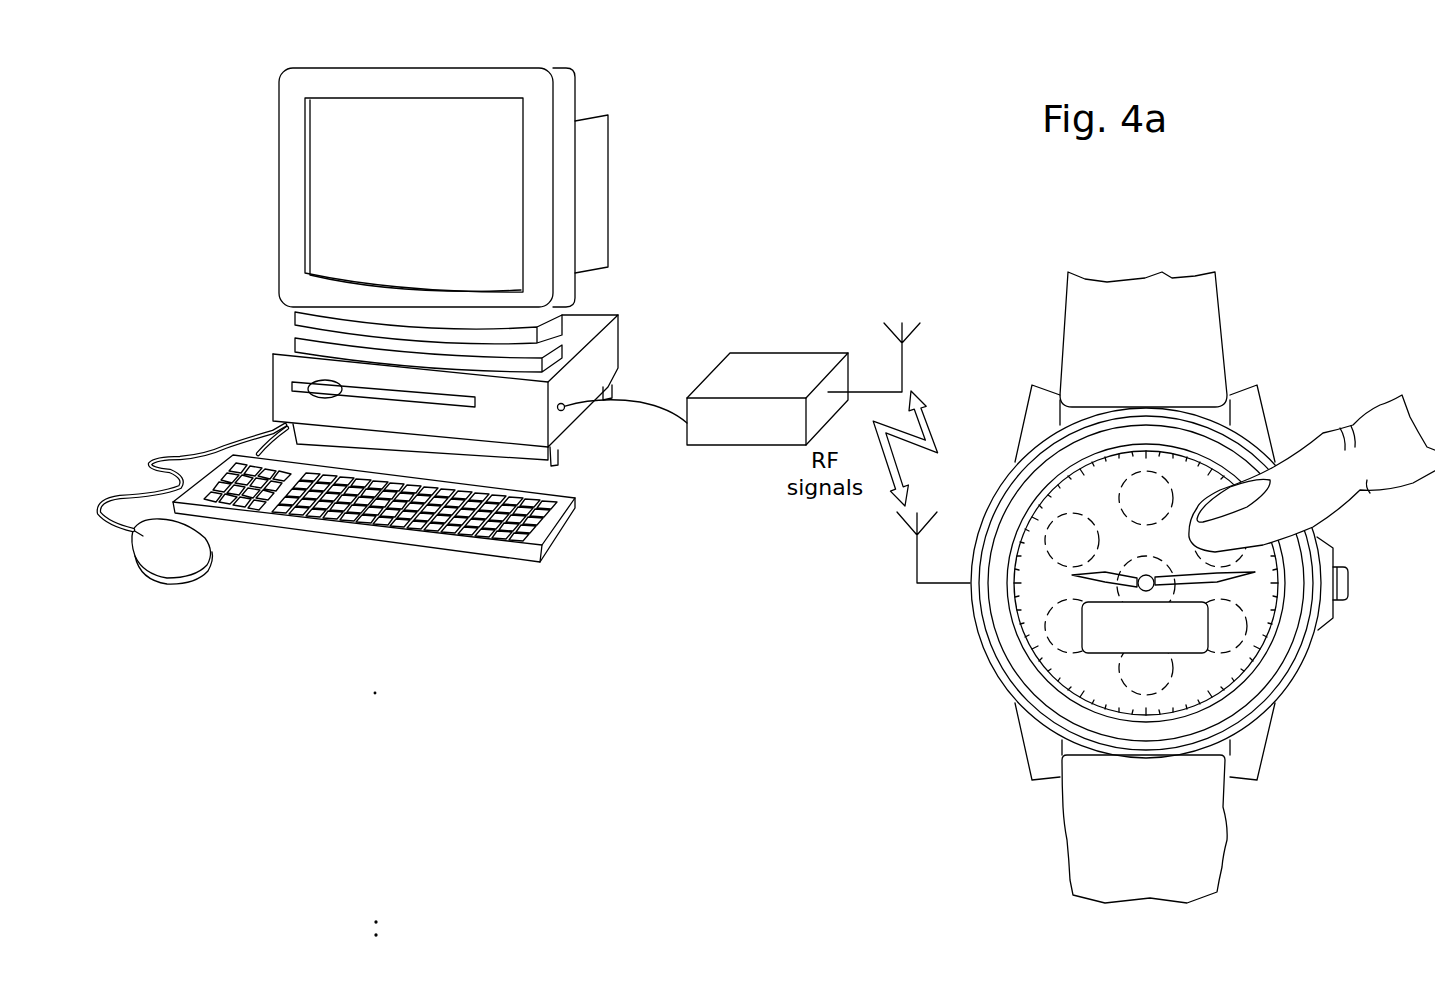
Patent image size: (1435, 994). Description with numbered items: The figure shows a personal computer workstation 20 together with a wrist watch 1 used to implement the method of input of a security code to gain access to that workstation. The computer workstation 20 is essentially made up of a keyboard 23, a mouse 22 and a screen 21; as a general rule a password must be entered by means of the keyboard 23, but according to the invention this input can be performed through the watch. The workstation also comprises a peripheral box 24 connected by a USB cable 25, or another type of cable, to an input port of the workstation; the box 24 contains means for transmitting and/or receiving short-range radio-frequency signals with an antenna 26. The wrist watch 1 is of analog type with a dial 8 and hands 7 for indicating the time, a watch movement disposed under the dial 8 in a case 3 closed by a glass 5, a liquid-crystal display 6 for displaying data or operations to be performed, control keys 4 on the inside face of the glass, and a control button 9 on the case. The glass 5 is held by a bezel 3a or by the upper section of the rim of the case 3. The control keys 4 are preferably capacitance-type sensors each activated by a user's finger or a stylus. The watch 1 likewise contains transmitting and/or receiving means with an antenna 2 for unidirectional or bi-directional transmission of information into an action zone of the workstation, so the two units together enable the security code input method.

The wrist watch 1 is at (982, 740).
The antenna 2 is at (917, 565).
The case 3 is at (1308, 652).
The bezel 3a is at (1038, 485).
The control keys 4 is at (1047, 557).
The glass 5 is at (1037, 658).
The liquid-crystal display 6 is at (1183, 650).
The hands 7 is at (1083, 600).
The dial 8 is at (1188, 682).
The control button 9 is at (1350, 583).
The personal computer workstation 20 is at (640, 123).
The screen 21 is at (332, 195).
The mouse 22 is at (180, 562).
The keyboard 23 is at (374, 521).
The peripheral box 24 is at (757, 364).
The USB cable 25 is at (567, 411).
The antenna 26 is at (872, 392).